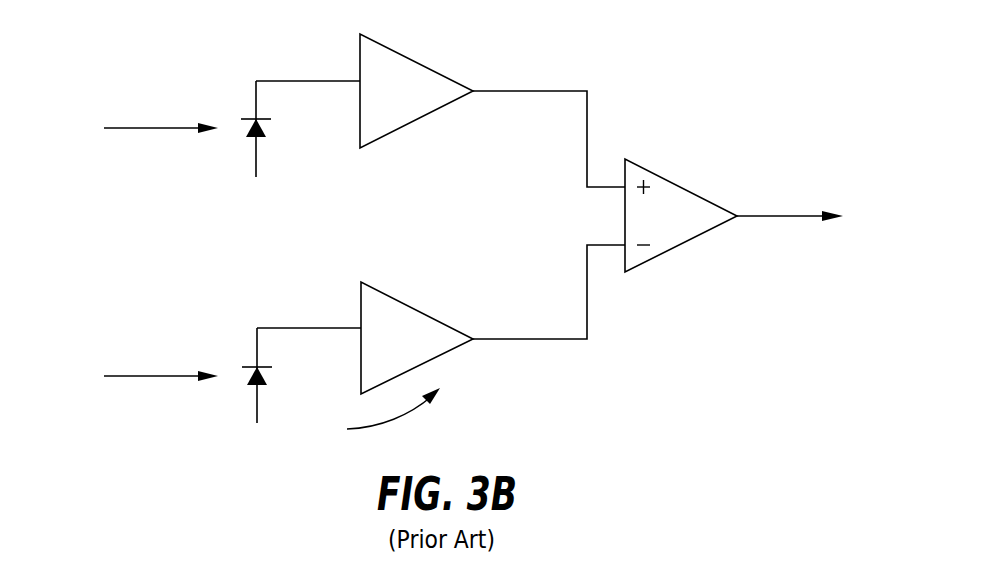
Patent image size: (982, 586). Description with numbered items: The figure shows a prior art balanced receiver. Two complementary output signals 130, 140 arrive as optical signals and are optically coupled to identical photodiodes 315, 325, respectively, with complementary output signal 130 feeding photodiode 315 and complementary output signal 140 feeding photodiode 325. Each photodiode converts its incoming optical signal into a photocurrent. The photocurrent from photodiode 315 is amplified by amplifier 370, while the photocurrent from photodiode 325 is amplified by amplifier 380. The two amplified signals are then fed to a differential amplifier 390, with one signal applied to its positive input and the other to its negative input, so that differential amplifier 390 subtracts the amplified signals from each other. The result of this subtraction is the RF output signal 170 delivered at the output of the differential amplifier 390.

The complementary output signal 130 is at (150, 130).
The photodiode 315 is at (249, 136).
The amplifier 370 is at (405, 105).
The complementary output signal 140 is at (150, 373).
The photodiode 325 is at (254, 366).
The amplifier 380 is at (407, 352).
The differential amplifier 390 is at (722, 181).
The RF output signal 170 is at (787, 218).